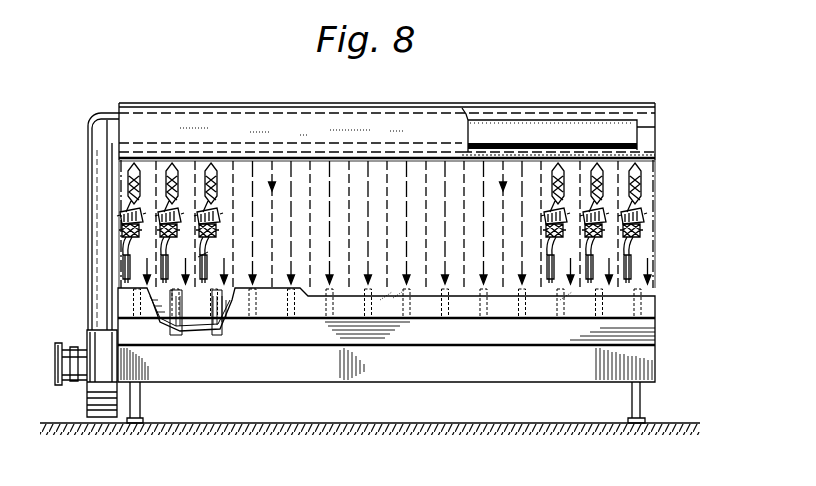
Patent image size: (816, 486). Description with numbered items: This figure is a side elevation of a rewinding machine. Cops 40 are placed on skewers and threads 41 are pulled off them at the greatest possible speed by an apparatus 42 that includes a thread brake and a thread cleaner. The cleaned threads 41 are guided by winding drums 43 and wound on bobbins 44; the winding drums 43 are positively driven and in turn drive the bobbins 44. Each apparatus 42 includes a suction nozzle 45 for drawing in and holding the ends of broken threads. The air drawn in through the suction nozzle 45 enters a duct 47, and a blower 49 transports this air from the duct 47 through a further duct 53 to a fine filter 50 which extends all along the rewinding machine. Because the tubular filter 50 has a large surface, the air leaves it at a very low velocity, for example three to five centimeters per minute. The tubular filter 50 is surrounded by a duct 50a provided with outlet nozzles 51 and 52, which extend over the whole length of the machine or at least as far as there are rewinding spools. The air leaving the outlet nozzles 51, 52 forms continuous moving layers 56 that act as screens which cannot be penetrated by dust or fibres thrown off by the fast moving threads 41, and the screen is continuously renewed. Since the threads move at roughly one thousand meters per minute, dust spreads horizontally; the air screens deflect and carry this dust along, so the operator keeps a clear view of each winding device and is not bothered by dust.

The cop 40 is at (210, 172).
The thread 41 is at (209, 256).
The apparatus including a thread brake and a thread cleaner 42 is at (238, 259).
The winding drum 43 is at (121, 233).
The bobbin 44 is at (120, 213).
The suction nozzle 45 is at (200, 323).
The duct 47 is at (122, 276).
The blower 49 is at (100, 393).
The fine filter 50 is at (243, 119).
The duct 50a is at (619, 109).
The outlet nozzle 51 is at (314, 159).
The outlet nozzle 52 is at (488, 160).
The duct 53 is at (98, 261).
The moving air layer 56 is at (122, 179).